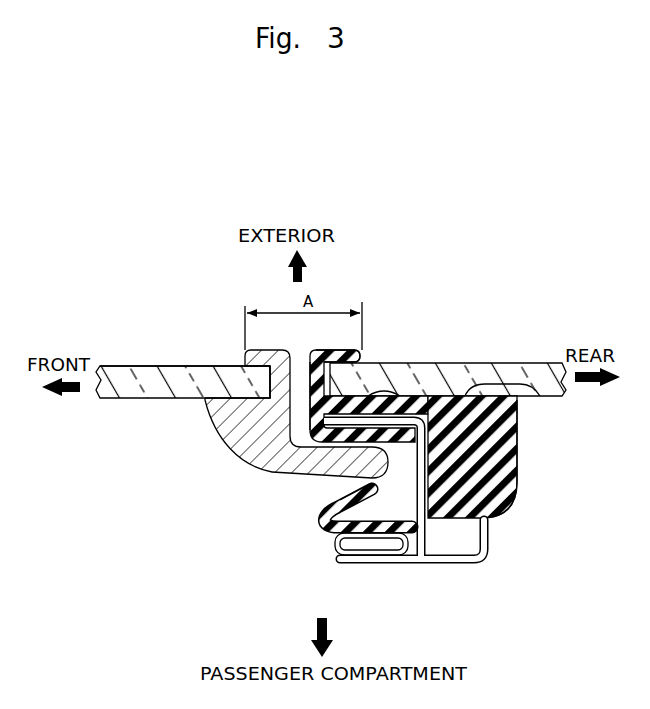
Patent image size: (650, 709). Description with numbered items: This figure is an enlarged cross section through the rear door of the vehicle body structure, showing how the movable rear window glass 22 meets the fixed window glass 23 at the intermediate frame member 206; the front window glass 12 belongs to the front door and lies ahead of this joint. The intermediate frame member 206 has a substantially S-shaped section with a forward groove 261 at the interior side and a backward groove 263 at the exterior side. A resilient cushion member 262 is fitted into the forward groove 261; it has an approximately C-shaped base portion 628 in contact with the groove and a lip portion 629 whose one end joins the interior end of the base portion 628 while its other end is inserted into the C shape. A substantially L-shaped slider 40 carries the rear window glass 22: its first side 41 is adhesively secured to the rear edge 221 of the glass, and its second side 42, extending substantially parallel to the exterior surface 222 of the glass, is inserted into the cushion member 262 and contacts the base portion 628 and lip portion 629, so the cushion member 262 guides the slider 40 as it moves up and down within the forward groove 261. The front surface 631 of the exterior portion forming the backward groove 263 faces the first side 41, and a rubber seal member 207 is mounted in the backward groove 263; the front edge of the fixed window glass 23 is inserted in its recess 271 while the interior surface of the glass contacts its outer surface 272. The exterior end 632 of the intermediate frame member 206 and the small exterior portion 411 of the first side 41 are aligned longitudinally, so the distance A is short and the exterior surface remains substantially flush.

The front window glass 12 is at (514, 457).
The rear window glass 22 is at (135, 398).
The fixed window glass 23 is at (508, 370).
The slider 40 is at (280, 393).
The first side of slider 41 is at (210, 415).
The second side of slider 42 is at (275, 475).
The intermediate frame member 206 is at (340, 543).
The seal member 207 is at (517, 452).
The rear edge of rear window glass 221 is at (245, 364).
The exterior surface of rear window glass 222 is at (126, 366).
The forward groove 261 is at (352, 570).
The cushion member 262 is at (322, 505).
The backward groove 263 is at (356, 352).
The recess 271 is at (382, 395).
The outer surface of seal member 272 is at (540, 396).
The exterior portion of first side of slider 411 is at (258, 350).
The base portion of cushion member 628 is at (473, 563).
The lip portion of cushion member 629 is at (333, 484).
The front surface of intermediate frame member 631 is at (312, 385).
The exterior end of intermediate frame member 632 is at (350, 350).